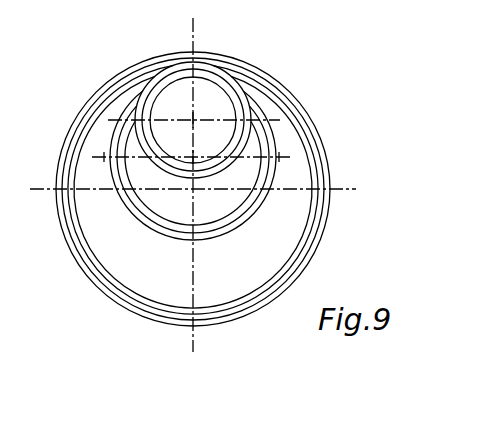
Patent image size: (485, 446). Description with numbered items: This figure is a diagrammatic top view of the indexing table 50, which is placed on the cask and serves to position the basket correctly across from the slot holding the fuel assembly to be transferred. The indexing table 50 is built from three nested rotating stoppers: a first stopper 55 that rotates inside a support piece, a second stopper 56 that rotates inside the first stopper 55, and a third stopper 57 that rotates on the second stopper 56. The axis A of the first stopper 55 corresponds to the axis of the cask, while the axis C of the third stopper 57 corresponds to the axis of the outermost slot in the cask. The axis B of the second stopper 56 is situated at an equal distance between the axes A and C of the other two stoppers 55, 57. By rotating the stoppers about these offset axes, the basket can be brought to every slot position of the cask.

The indexing table 50 is at (330, 107).
The first stopper 55 is at (283, 222).
The second stopper 56 is at (268, 173).
The third stopper 57 is at (170, 60).
The axis of the first stopper A is at (188, 193).
The axis of the second stopper B is at (229, 141).
The axis of the third stopper C is at (197, 117).